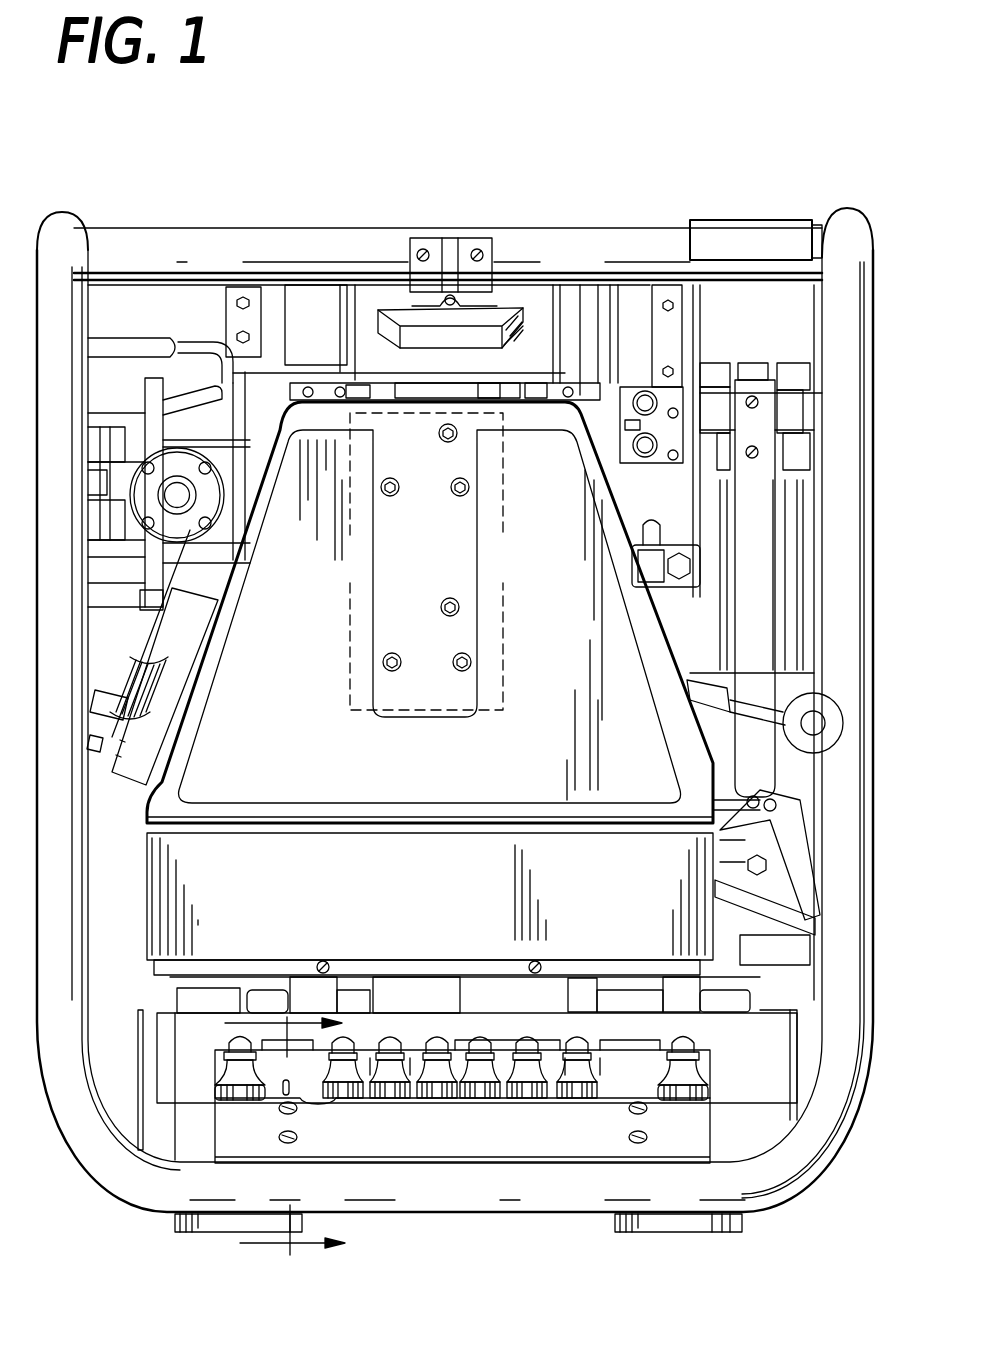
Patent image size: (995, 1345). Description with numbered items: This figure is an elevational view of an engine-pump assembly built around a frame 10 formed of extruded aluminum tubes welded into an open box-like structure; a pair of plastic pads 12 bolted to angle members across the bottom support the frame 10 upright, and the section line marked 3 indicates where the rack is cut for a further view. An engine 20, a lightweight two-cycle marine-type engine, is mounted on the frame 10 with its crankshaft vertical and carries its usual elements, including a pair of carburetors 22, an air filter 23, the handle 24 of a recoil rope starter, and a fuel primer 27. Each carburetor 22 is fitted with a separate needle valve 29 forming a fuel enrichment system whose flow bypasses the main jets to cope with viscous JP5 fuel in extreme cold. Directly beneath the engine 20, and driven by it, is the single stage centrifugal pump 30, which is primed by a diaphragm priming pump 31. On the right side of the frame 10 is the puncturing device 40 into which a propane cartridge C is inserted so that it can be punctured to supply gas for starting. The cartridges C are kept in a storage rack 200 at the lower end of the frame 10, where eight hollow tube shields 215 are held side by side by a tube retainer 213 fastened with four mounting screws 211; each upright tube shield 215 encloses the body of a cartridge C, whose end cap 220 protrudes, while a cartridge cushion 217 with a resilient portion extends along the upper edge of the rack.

The frame 10 is at (875, 233).
The plastic pads 12 is at (197, 1233).
The section line 3- 3 is at (271, 1144).
The engine 20 is at (370, 372).
The carburetors 22 is at (350, 583).
The air filter 23 is at (340, 780).
The handle 24 is at (502, 310).
The fuel primer 27 is at (148, 750).
The needle valve 29 is at (630, 455).
The pump 30 is at (792, 960).
The diaphragm priming pump 31 is at (172, 407).
The puncturing device 40 is at (790, 305).
The storage rack 200 is at (767, 1060).
The mounting screws 211 is at (280, 1143).
The tube retainer 213 is at (395, 1147).
The tube shields 215 is at (217, 1105).
The cartridge cushion 217 is at (610, 1050).
The end caps 220 is at (437, 1042).
The cartridge C is at (387, 1080).